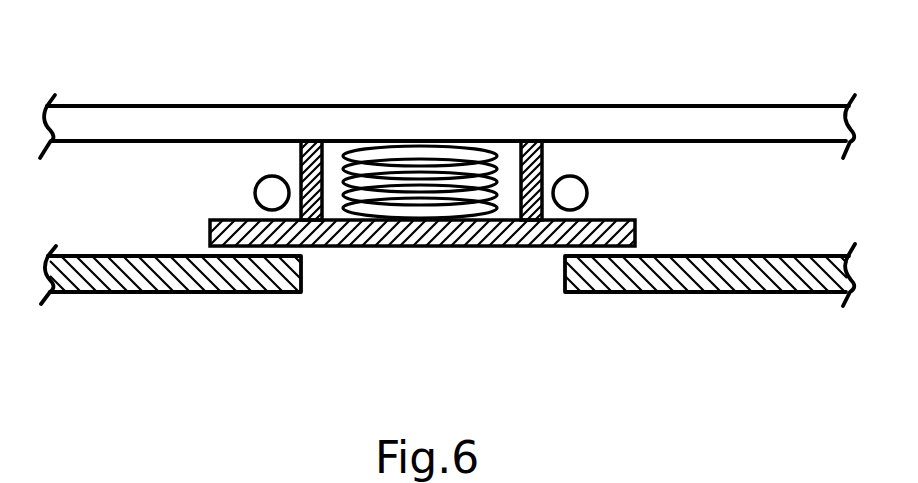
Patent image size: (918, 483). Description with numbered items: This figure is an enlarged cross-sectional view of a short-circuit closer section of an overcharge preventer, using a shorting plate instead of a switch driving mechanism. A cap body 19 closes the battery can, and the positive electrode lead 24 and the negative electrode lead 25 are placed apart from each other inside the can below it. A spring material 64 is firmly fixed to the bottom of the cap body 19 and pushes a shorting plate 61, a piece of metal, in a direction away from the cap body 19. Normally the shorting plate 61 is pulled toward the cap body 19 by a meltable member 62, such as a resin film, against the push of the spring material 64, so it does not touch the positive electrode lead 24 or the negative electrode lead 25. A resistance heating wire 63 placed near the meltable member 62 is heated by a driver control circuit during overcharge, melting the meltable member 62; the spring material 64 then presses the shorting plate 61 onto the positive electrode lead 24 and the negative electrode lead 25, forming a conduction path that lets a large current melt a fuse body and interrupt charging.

The cap body 19 is at (781, 117).
The positive electrode lead 24 is at (762, 278).
The negative electrode lead 25 is at (124, 291).
The shorting plate 61 is at (423, 247).
The meltable member 62 is at (316, 141).
The resistance heating wire 63 is at (263, 190).
The spring material 64 is at (427, 173).